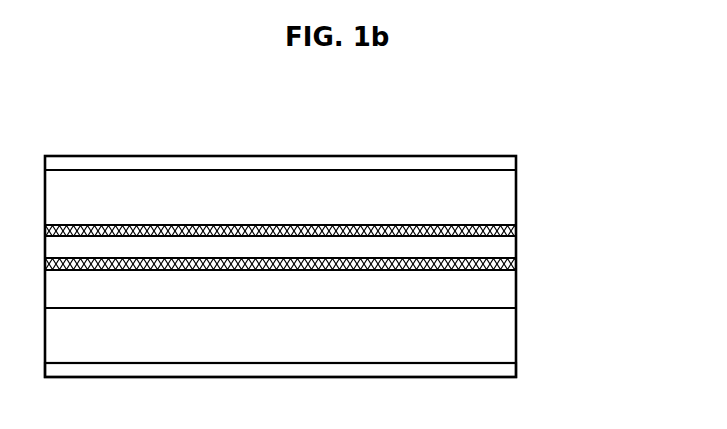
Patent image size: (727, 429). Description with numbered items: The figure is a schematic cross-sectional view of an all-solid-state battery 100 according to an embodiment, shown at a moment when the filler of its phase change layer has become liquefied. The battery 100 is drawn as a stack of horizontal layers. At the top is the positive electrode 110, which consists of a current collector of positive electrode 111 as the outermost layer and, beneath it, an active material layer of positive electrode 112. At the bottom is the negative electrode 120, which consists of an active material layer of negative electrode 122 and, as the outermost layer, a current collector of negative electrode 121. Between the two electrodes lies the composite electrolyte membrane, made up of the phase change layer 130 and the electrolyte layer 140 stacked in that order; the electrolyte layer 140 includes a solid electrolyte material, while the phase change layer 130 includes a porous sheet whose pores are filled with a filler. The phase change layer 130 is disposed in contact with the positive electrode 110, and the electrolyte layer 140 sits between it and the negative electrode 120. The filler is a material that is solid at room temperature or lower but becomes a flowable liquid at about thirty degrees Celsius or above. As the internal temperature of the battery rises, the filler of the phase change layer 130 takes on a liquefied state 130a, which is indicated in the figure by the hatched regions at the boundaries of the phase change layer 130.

The battery 100 is at (105, 121).
The positive electrode 110 is at (573, 155).
The current collector of positive electrode 111 is at (516, 165).
The active material layer of positive electrode 112 is at (516, 201).
The phase change layer filled with filler 130a is at (516, 229).
The phase change layer 130 is at (516, 248).
The electrolyte layer 140 is at (516, 293).
The negative electrode 120 is at (573, 327).
The active material layer of negative electrode 122 is at (516, 339).
The current collector of negative electrode 121 is at (516, 372).